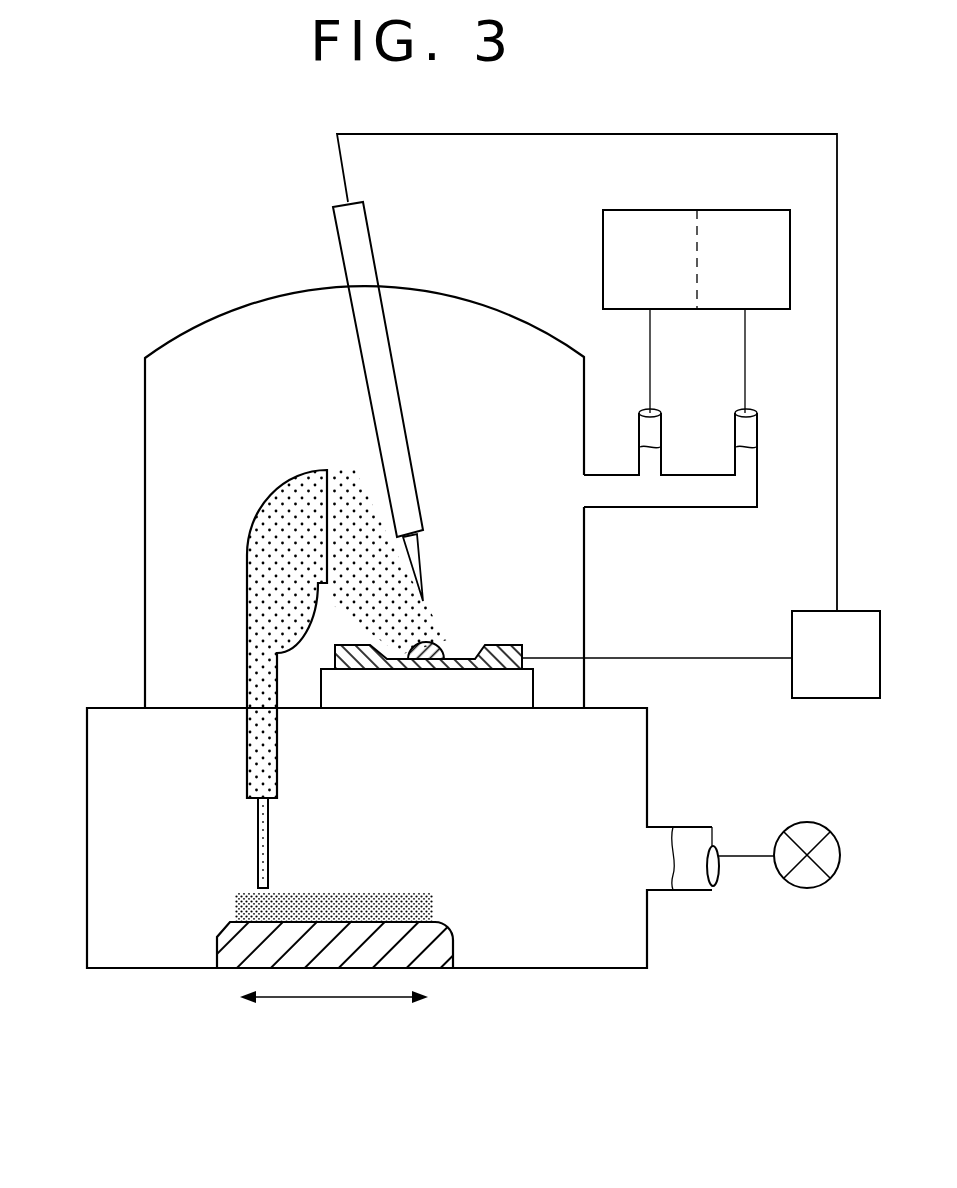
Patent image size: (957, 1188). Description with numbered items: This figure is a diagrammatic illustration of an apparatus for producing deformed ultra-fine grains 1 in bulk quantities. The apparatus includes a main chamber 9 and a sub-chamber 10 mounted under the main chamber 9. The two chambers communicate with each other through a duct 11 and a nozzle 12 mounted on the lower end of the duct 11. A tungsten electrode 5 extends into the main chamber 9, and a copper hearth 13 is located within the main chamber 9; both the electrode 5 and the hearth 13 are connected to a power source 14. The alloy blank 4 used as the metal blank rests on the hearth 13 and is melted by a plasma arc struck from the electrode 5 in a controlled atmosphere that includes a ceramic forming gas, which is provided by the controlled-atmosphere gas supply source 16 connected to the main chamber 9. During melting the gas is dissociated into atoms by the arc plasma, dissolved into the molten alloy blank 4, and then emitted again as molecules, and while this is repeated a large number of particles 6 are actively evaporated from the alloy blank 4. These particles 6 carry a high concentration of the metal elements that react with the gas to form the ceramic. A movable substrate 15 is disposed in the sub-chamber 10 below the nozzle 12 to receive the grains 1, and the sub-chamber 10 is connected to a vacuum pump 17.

The deformed ultra-fine grain 1 is at (383, 889).
The alloy blank 4 is at (433, 640).
The tungsten electrode 5 is at (387, 355).
The particles 6 is at (433, 615).
The main chamber 9 is at (147, 470).
The sub-chamber 10 is at (87, 748).
The duct 11 is at (247, 522).
The nozzle 12 is at (268, 835).
The copper hearth 13 is at (499, 669).
The power source 14 is at (818, 678).
The movable substrate 15 is at (440, 950).
The controlled-atmosphere gas supply source 16 is at (603, 262).
The vacuum pump 17 is at (810, 877).